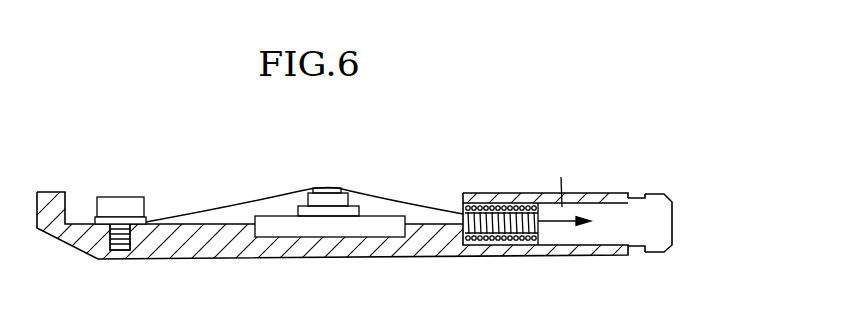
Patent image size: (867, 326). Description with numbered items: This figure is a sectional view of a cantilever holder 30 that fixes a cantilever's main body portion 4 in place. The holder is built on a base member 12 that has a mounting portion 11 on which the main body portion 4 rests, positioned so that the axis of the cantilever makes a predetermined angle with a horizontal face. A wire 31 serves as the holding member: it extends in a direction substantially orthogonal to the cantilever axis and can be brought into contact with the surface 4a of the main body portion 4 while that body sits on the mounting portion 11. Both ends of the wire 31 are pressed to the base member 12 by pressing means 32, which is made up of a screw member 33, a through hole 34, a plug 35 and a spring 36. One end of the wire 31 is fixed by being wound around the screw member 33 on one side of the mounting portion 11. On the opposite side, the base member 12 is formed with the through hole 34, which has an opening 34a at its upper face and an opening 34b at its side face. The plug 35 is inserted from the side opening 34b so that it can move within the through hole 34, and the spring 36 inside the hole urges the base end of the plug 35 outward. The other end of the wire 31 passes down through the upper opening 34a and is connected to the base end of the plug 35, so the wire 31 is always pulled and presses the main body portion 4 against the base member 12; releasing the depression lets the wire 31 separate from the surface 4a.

The main body portion 4 is at (340, 188).
The surface of the main body portion 4a is at (332, 188).
The mounting portion 11 is at (317, 200).
The base member 12 is at (257, 238).
The cantilever holder 30 is at (672, 138).
The wire 31 is at (415, 198).
The pressing means 32 is at (677, 212).
The screw member 33 is at (121, 198).
The through hole 34 is at (493, 215).
The opening at upper face 34a is at (463, 208).
The opening at side face 34b is at (637, 197).
The plug 35 is at (660, 235).
The spring 36 is at (498, 228).